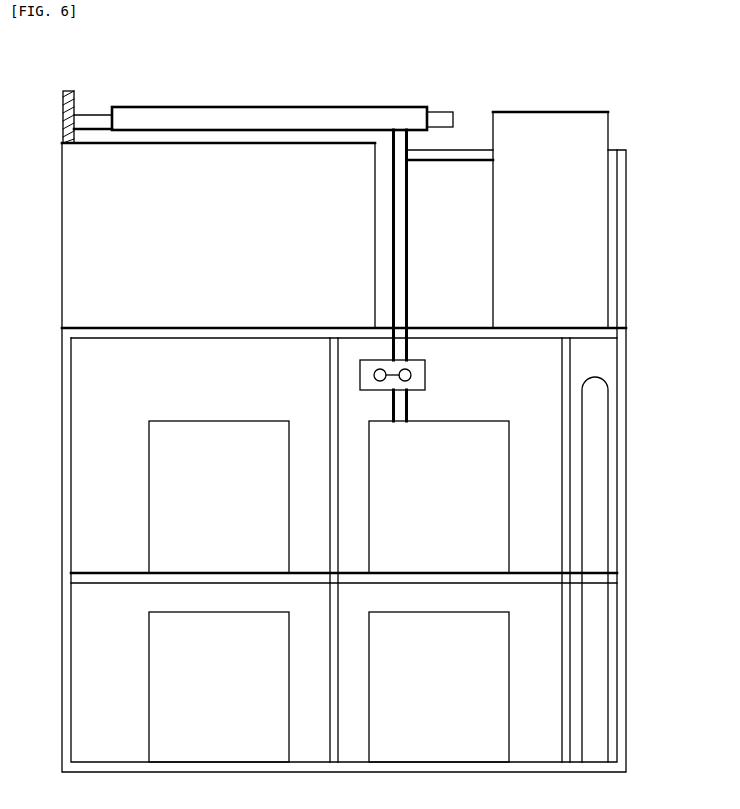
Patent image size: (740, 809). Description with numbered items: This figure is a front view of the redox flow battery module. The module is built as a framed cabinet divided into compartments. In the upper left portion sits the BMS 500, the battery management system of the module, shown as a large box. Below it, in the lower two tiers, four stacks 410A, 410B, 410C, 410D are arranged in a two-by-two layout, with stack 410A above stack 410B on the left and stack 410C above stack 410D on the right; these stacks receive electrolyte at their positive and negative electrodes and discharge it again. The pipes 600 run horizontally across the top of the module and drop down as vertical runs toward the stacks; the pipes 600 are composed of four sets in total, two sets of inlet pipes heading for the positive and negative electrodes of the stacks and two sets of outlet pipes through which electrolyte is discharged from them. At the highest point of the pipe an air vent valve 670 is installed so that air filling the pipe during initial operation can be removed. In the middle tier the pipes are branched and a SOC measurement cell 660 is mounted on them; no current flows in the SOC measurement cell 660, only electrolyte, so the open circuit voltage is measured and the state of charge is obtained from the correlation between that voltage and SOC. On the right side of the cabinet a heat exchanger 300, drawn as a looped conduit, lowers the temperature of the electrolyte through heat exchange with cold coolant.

The heat exchanger 300 is at (602, 462).
The stack 410A is at (219, 497).
The stack 410B is at (219, 687).
The stack 410C is at (439, 497).
The stack 410D is at (439, 687).
The BMS 500 is at (218, 235).
The pipes 600 is at (232, 113).
The SOC measurement cell 660 is at (418, 372).
The air vent valve 670 is at (457, 110).